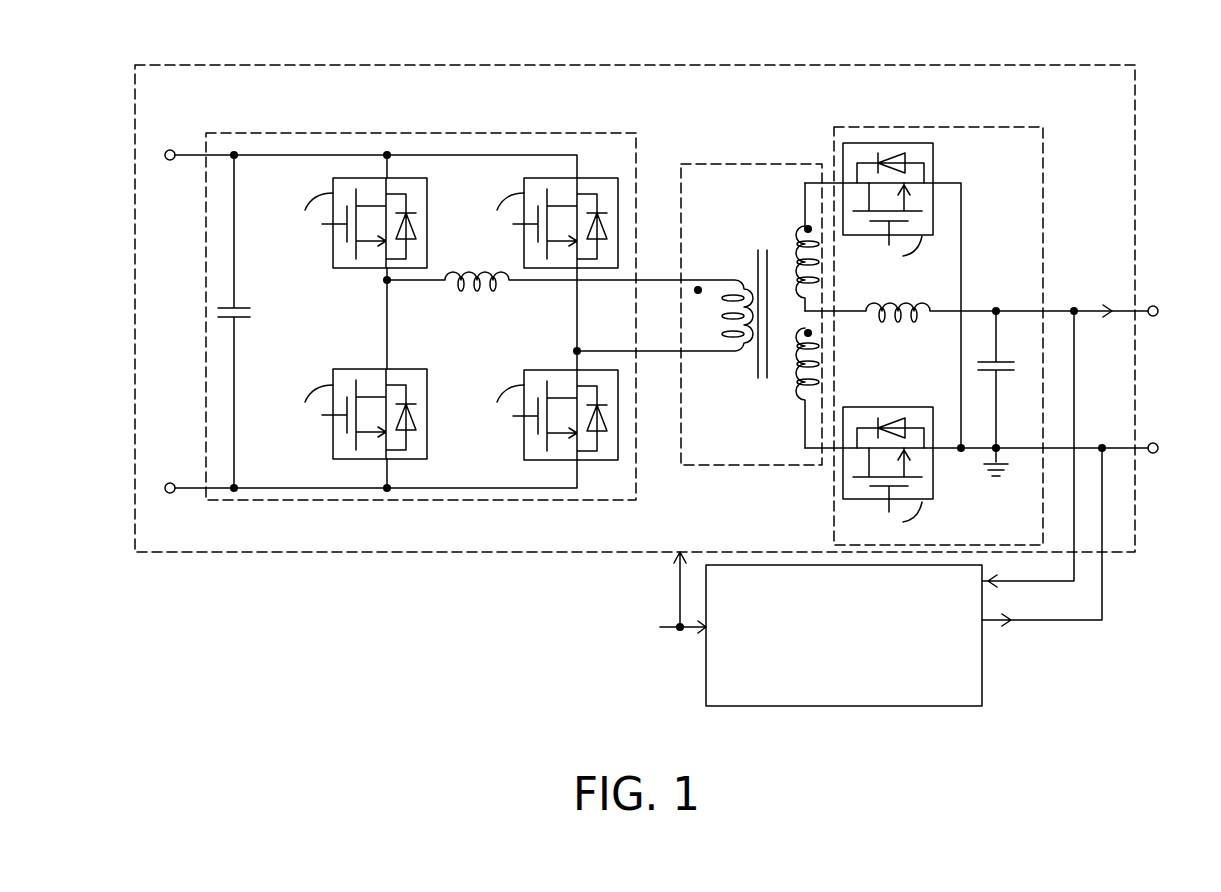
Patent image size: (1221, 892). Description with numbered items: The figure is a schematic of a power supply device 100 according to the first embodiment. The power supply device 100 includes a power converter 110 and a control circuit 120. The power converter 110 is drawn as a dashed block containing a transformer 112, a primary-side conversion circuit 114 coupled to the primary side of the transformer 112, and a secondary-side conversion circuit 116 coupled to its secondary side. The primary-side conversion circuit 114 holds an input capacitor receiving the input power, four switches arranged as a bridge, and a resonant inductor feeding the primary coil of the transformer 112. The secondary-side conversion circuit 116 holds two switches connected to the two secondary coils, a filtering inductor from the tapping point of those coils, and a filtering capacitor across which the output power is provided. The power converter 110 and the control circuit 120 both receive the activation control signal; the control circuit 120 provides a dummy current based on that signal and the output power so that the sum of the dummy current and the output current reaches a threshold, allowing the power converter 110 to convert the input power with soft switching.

The power supply device 100 is at (1216, 717).
The power converter 110 is at (949, 65).
The transformer 112 is at (712, 164).
The primary-side conversion circuit 114 is at (275, 133).
The secondary-side conversion circuit 116 is at (961, 127).
The control circuit 120 is at (982, 684).